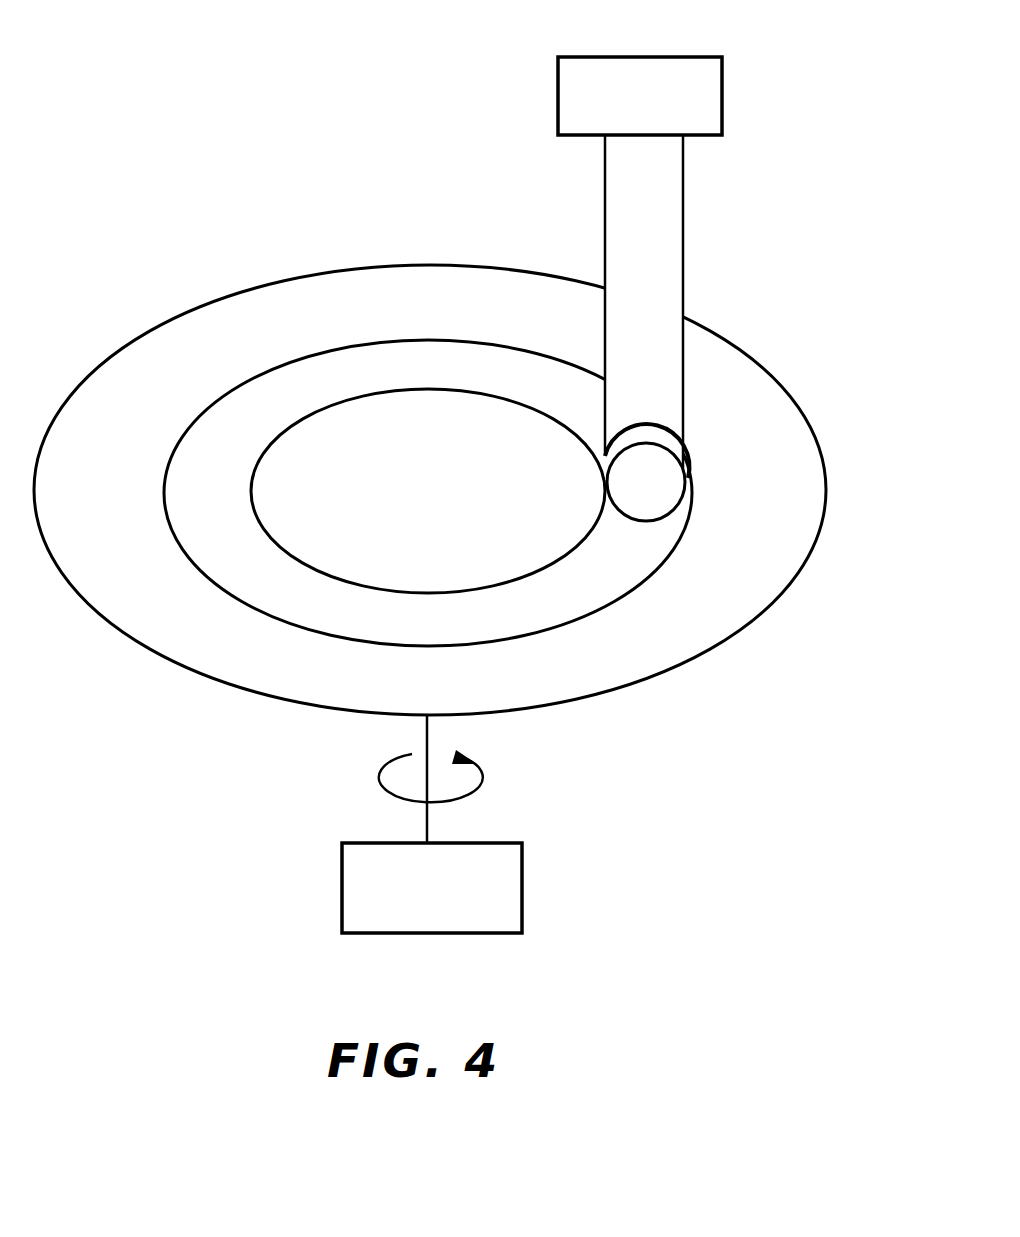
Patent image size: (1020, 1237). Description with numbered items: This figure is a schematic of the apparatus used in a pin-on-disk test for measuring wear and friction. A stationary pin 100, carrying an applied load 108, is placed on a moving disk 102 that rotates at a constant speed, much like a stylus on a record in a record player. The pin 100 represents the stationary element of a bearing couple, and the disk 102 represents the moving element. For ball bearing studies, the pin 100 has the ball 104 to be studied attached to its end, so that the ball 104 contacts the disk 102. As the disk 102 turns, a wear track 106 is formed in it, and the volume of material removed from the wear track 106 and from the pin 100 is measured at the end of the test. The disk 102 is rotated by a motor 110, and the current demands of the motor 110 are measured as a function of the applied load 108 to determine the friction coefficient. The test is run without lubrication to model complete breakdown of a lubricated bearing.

The pin 100 is at (655, 260).
The disk 102 is at (777, 557).
The ball 104 is at (677, 470).
The wear track 106 is at (578, 590).
The applied load 108 is at (693, 57).
The motor 110 is at (522, 897).